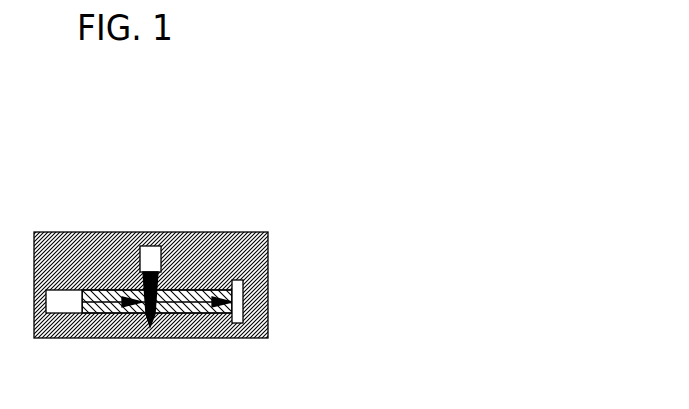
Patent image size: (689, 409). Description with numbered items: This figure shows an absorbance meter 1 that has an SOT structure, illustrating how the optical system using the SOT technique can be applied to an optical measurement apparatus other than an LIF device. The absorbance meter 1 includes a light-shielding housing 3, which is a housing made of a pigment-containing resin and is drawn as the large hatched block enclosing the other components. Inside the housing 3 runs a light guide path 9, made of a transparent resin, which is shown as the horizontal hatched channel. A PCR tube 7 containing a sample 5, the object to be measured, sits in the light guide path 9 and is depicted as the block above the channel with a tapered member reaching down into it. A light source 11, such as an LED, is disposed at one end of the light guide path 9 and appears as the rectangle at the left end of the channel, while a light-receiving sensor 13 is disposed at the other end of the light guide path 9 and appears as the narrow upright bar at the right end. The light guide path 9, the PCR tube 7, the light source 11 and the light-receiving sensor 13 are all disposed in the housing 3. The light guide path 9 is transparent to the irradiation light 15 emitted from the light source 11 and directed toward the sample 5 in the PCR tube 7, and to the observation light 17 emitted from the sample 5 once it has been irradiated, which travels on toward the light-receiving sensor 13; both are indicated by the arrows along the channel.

The absorbance meter 1 is at (254, 121).
The light-shielding housing 3 is at (245, 263).
The sample 5 is at (122, 262).
The PCR tube 7 is at (155, 251).
The light guide path 9 is at (97, 275).
The light source 11 is at (73, 307).
The light-receiving sensor 13 is at (252, 312).
The irradiation light 15 is at (106, 312).
The observation light 17 is at (198, 320).